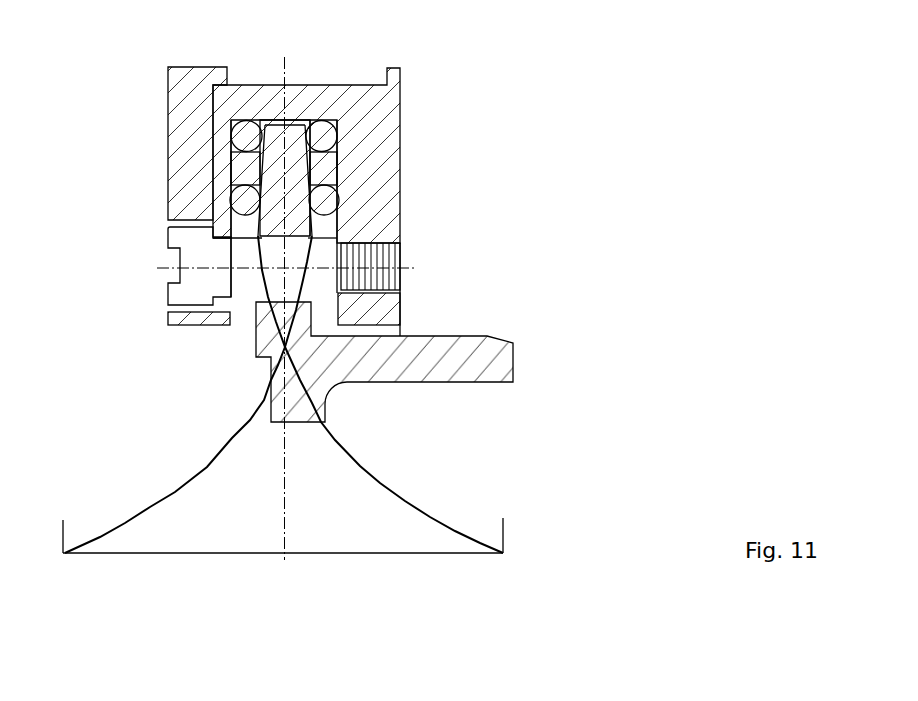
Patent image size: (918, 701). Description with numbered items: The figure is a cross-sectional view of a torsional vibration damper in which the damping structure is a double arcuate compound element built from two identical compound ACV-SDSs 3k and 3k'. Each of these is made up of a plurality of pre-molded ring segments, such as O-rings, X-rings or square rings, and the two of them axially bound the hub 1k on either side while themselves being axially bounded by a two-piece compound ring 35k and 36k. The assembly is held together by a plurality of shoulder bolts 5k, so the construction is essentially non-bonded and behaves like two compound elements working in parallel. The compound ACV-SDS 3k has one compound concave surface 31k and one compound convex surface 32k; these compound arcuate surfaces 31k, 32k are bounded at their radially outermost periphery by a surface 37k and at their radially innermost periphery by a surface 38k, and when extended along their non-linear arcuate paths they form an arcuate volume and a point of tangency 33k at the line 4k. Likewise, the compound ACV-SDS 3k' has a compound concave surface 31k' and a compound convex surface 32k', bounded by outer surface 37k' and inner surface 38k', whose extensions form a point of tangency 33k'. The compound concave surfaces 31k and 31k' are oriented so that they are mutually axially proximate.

The hub 1k is at (467, 353).
The compound ACV-SDS 3k is at (172, 194).
The compound ACV-SDS 3k' is at (406, 205).
The ACL 4k is at (397, 553).
The shoulder bolts 5k is at (188, 243).
The compound concave surface 31k is at (189, 178).
The compound concave surface 31k' is at (406, 178).
The compound convex surface 32k is at (152, 192).
The compound convex surface 32k' is at (415, 186).
The POT 33k is at (421, 394).
The POT 33k' is at (188, 394).
The two-piece compound ring 35k is at (187, 85).
The two-piece compound ring 36k is at (385, 103).
The surface 37k is at (267, 79).
The surface 37k' is at (346, 79).
The surface 38k is at (222, 313).
The surface 38k' is at (398, 253).